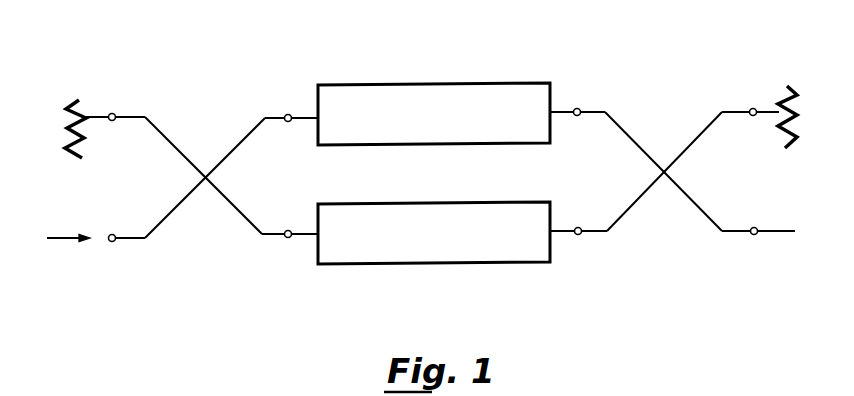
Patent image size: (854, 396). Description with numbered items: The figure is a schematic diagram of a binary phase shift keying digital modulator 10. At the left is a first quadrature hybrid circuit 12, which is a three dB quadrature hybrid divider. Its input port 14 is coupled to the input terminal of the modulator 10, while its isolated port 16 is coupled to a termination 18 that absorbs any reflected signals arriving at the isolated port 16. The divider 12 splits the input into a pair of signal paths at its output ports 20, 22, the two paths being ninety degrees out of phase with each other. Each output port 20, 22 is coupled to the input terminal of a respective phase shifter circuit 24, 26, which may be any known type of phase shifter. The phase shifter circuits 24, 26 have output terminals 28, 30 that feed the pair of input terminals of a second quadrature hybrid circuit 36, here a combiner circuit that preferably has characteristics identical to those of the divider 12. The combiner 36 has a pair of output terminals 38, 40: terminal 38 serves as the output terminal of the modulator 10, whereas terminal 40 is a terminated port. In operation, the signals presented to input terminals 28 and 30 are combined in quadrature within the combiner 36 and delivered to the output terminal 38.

The binary phase shift key digital modulator 10 is at (152, 44).
The first quadrature hybrid circuit 12 is at (207, 247).
The input port 14 is at (112, 242).
The isolated port 16 is at (112, 114).
The termination 18 is at (66, 126).
The output port 20 is at (287, 114).
The output port 22 is at (287, 237).
The phase shifter circuit 24 is at (370, 85).
The phase shifter circuit 26 is at (370, 204).
The output terminal 28 is at (577, 109).
The output terminal 30 is at (578, 234).
The second quadrature hybrid circuit 36 is at (672, 243).
The output terminal 38 is at (754, 234).
The terminated port 40 is at (753, 109).